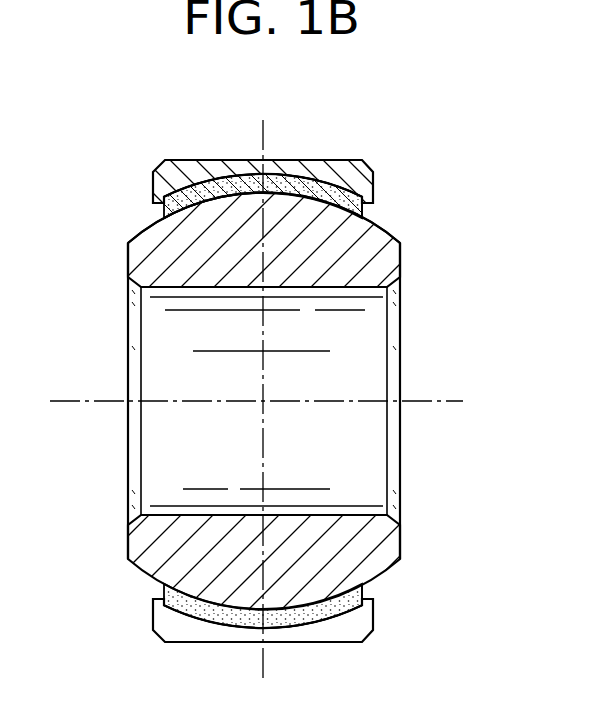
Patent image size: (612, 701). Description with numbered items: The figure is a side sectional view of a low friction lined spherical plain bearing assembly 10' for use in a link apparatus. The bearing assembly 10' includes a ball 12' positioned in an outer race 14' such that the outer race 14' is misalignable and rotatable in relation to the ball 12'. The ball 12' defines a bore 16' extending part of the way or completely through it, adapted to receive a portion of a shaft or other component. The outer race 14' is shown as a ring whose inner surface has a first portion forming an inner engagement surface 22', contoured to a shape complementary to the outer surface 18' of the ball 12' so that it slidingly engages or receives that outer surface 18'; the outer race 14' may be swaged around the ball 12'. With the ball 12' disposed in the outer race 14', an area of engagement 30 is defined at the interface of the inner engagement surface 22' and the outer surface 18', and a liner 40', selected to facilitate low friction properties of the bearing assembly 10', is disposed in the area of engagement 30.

The bearing assembly 10' is at (306, 383).
The ball 12' is at (306, 400).
The outer race 14' is at (336, 400).
The bore 16' is at (303, 401).
The outer surface 18' is at (250, 214).
The inner engagement surface 22' is at (266, 401).
The area of engagement 30 is at (363, 208).
The liner 40' is at (329, 400).